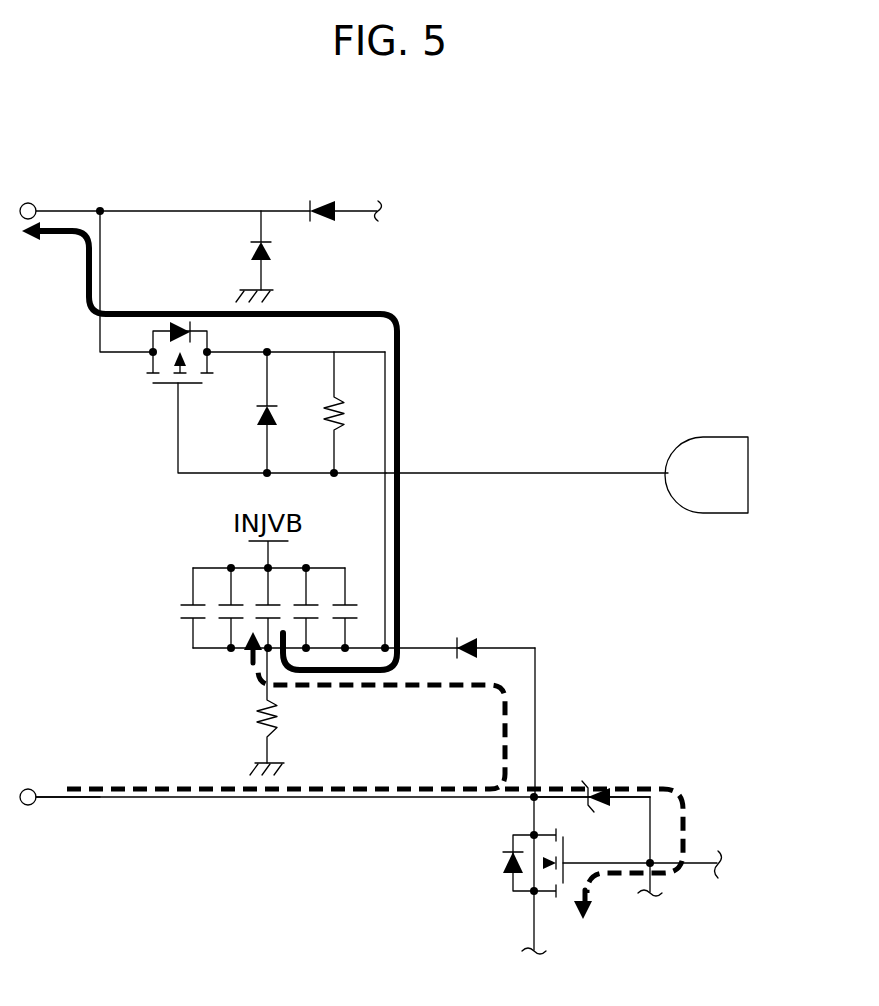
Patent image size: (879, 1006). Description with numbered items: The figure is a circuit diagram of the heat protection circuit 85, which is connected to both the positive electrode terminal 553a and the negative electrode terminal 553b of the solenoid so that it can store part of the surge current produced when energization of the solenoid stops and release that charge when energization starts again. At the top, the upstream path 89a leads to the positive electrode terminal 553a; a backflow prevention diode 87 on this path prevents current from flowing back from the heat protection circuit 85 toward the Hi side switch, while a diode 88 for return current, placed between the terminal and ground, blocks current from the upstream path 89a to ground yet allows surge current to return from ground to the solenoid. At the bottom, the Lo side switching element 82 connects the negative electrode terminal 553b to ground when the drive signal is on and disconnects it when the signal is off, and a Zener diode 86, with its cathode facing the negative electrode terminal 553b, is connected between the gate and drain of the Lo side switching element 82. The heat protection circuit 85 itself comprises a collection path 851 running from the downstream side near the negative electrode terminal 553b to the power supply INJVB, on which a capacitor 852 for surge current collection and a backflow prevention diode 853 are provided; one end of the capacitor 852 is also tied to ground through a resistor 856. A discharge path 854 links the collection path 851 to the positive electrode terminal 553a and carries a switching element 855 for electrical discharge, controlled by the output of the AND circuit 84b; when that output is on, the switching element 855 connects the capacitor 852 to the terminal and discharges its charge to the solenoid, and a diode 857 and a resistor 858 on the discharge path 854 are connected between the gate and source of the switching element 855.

The positive electrode terminal 553a is at (29, 203).
The upstream path 89a is at (212, 211).
The backflow prevention diode 87 is at (326, 202).
The diode for return current 88 is at (272, 251).
The heat protection circuit 85 is at (427, 332).
The switching element for electrical discharge 855 is at (121, 404).
The diode 857 is at (262, 412).
The resistor 858 is at (340, 405).
The discharge path 854 is at (387, 455).
The AND circuit 84b is at (730, 436).
The capacitor for surge current collection 852 is at (157, 600).
The backflow prevention diode 853 is at (470, 640).
The collection path 851 is at (531, 646).
The resistor 856 is at (275, 721).
The negative electrode terminal 553b is at (29, 789).
The Zener diode 86 is at (603, 789).
The Lo side switching element 82 is at (491, 905).